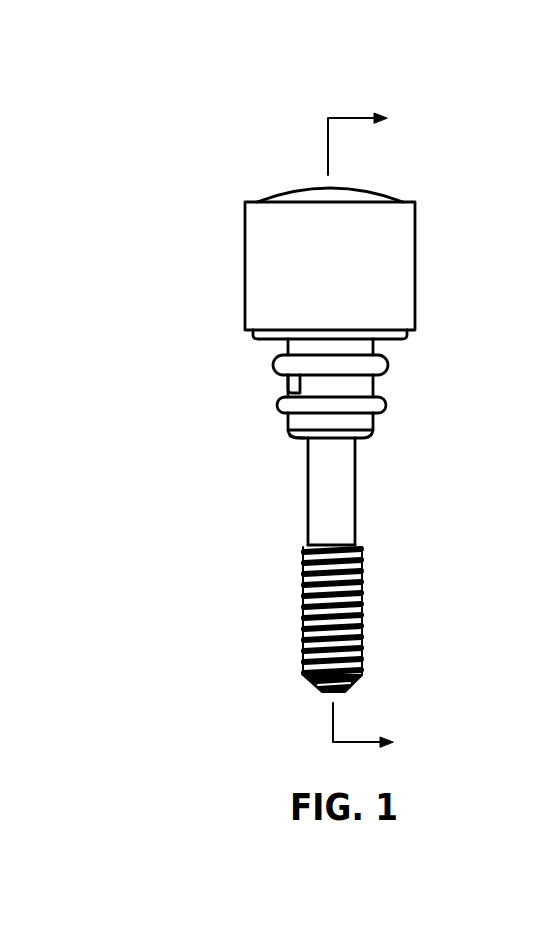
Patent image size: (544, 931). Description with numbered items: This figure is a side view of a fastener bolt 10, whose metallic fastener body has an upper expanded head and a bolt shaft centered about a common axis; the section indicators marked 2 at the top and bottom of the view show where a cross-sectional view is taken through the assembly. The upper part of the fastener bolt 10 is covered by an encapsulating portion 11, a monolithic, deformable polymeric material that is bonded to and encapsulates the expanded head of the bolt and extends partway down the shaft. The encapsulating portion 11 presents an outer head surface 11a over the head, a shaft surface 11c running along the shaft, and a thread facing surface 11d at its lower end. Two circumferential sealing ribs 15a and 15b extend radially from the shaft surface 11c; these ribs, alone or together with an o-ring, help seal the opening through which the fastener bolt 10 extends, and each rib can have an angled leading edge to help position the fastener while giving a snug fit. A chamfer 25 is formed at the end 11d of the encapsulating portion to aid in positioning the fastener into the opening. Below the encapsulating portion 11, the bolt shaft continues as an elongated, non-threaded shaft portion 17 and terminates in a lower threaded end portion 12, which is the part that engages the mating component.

The section line 2- 2 is at (378, 433).
The fastener bolt 10 is at (440, 178).
The encapsulating portion 11 is at (258, 288).
The outer head surface 11a is at (397, 256).
The shaft surface 11c is at (293, 388).
The thread facing surface 11d is at (300, 440).
The lower threaded end portion 12 is at (357, 627).
The circumferential sealing rib 15a is at (386, 363).
The circumferential sealing rib 15b is at (386, 402).
The non-threaded shaft portion 17 is at (345, 502).
The chamfer 25 is at (373, 437).